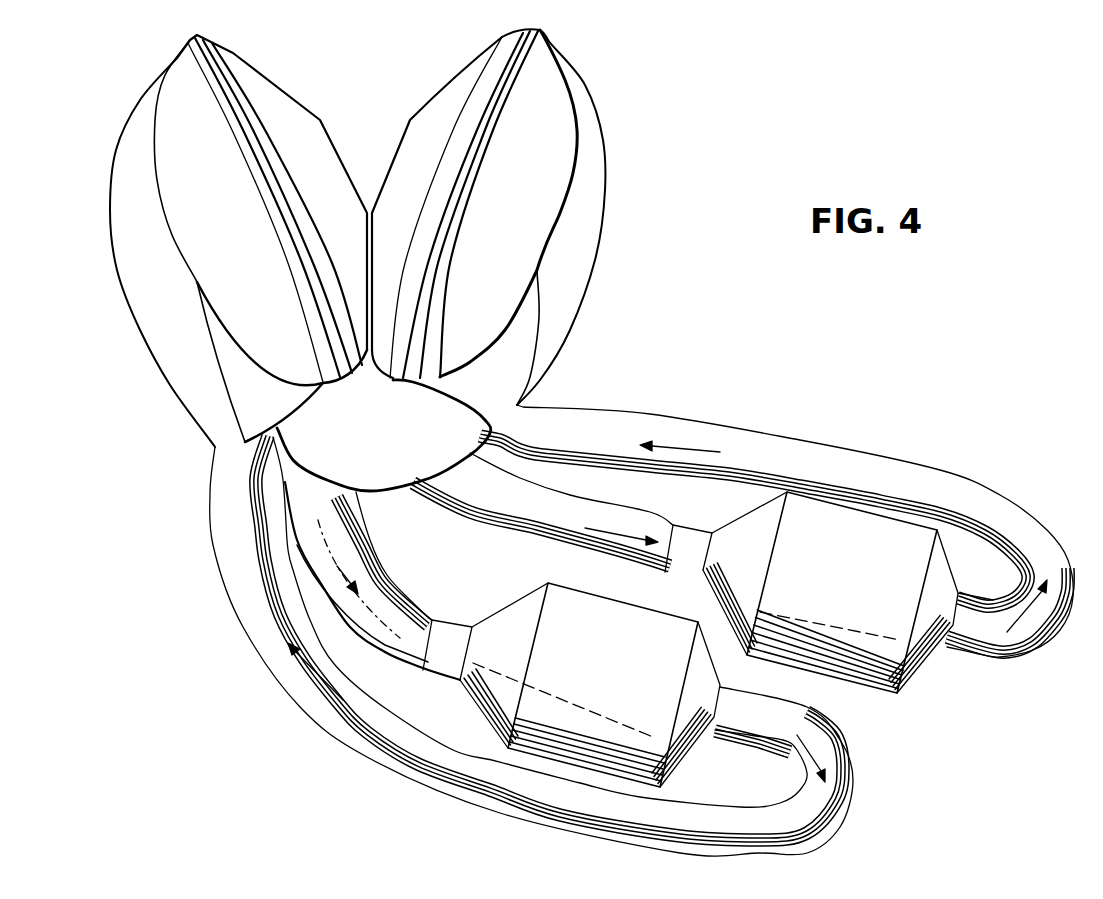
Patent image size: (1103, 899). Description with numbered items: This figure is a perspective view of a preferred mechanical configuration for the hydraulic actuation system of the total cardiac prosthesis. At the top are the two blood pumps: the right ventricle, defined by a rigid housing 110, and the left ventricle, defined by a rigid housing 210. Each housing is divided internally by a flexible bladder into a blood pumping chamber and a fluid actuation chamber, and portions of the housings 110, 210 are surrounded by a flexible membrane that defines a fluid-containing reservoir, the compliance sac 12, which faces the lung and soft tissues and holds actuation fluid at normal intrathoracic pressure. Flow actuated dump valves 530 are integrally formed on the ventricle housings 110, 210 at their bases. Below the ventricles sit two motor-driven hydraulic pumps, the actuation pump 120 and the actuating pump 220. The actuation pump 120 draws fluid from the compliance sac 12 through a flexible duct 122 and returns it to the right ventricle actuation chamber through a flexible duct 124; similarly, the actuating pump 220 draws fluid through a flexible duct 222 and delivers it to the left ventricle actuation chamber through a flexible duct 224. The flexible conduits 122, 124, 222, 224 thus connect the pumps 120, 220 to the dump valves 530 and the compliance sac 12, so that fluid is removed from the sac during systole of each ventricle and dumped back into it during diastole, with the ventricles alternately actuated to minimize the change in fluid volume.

The compliance sac 12 is at (142, 255).
The rigid housing 110 is at (170, 152).
The rigid housing 210 is at (547, 172).
The flow actuated dump valve 530 is at (230, 377).
The actuation pump 120 is at (612, 705).
The actuating pump 220 is at (855, 610).
The flexible duct 122 is at (352, 562).
The flexible duct 124 is at (228, 530).
The flexible duct 222 is at (530, 543).
The flexible duct 224 is at (753, 437).